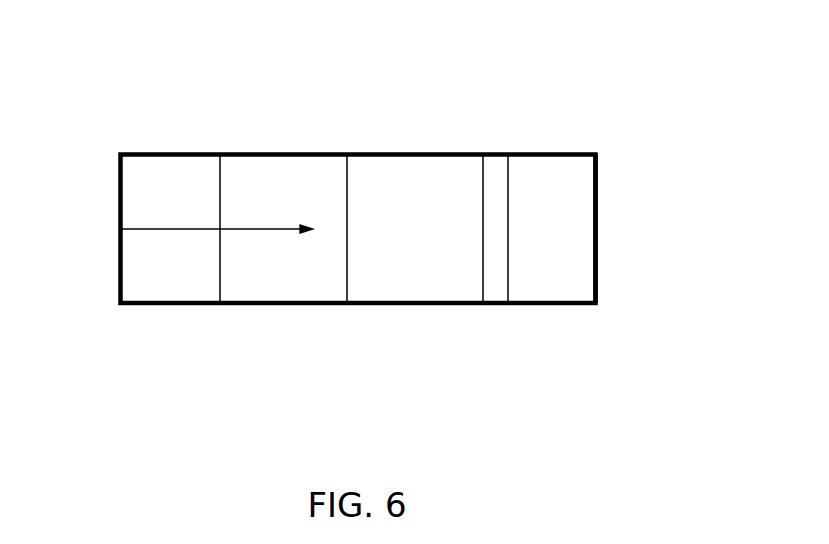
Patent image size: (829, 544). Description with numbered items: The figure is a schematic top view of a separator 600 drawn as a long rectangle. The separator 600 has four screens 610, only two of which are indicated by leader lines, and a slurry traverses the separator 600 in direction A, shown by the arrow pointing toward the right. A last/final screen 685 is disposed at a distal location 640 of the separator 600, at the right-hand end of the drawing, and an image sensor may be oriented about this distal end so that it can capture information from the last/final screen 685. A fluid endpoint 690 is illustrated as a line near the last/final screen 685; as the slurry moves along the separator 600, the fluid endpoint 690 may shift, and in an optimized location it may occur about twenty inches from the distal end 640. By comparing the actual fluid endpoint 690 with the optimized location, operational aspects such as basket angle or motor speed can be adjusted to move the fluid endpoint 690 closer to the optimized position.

The separator 600 is at (384, 191).
The screens 610 is at (243, 269).
The distal location 640 is at (630, 226).
The last/final screen 685 is at (532, 232).
The fluid endpoint 690 is at (510, 152).